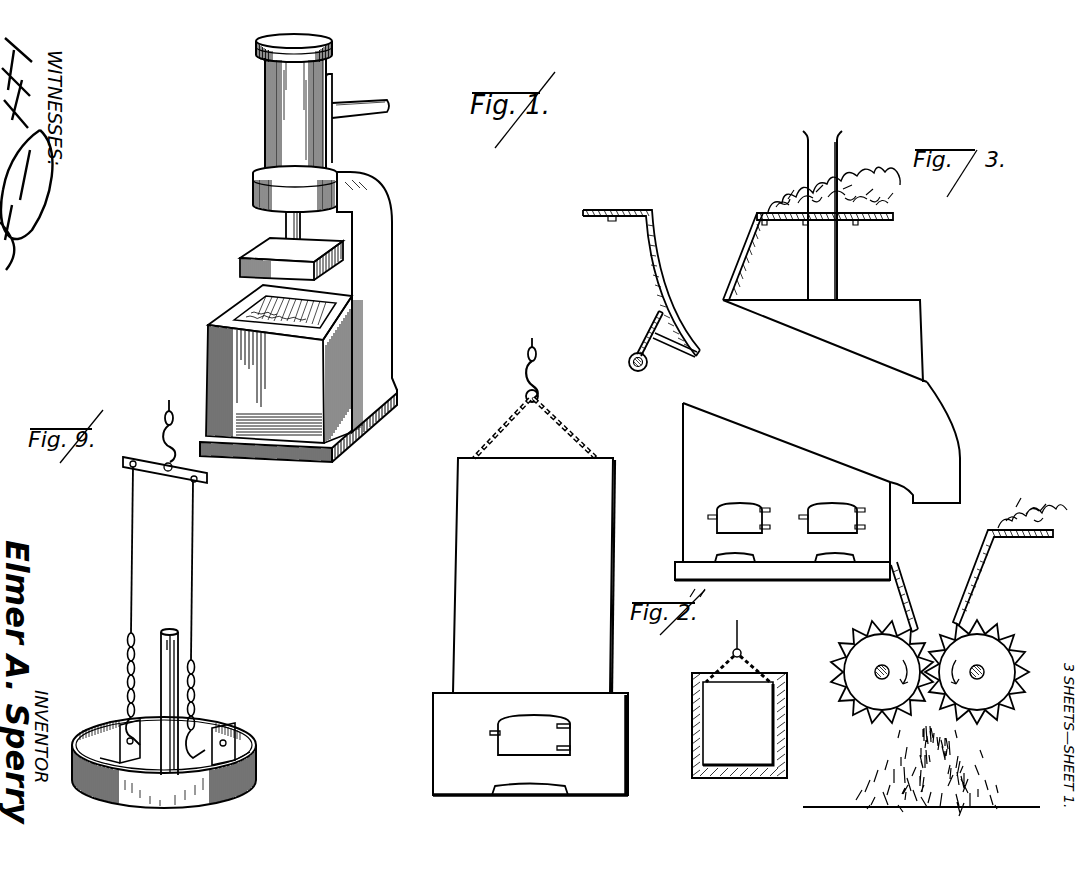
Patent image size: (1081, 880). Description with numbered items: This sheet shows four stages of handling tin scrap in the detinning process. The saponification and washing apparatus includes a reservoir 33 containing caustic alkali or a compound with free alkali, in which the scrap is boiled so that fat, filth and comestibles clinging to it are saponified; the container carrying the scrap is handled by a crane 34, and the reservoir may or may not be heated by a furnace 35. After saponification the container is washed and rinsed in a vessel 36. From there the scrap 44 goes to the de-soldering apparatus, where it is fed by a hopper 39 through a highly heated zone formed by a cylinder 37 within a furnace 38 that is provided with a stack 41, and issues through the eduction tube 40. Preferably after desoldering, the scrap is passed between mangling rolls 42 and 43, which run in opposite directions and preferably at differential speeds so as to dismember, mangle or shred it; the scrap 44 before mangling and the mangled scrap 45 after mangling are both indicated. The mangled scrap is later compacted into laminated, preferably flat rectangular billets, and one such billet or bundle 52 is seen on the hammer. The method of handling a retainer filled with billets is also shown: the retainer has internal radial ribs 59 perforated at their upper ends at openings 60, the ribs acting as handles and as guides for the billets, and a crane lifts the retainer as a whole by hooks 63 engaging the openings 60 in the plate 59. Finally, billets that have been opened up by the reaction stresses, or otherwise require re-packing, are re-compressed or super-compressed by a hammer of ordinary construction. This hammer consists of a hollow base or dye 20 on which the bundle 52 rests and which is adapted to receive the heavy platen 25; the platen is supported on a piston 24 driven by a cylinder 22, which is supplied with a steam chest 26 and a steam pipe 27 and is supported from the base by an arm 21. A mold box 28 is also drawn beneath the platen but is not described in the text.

In FIG. 1, the hollow base or dye 20 is at (300, 425).
In FIG. 1, the arm 21 is at (378, 272).
In FIG. 1, the cylinder 22 is at (262, 109).
In FIG. 1, the piston 24 is at (286, 228).
In FIG. 1, the heavy platen 25 is at (240, 266).
In FIG. 1, the steam chest 26 is at (337, 92).
In FIG. 1, the steam pipe 27 is at (388, 106).
In FIG. 1, the mold box 28 is at (240, 330).
In FIG. 1, the billet 52 is at (264, 305).
In FIG. 2, the reservoir 33 is at (534, 575).
In FIG. 2, the crane 34 is at (545, 380).
In FIG. 2, the furnace 35 is at (530, 744).
In FIG. 2, the washing vessel 36 is at (788, 727).
In FIG. 3, the cylinder 37 is at (805, 391).
In FIG. 3, the furnace 38 is at (799, 448).
In FIG. 3, the hopper 39 is at (663, 261).
In FIG. 3, the eduction tube 40 is at (925, 442).
In FIG. 3, the stack 41 is at (830, 160).
In FIG. 3, the mangling roll 42 is at (977, 672).
In FIG. 3, the mangling roll 43 is at (882, 672).
In FIG. 2, the scrap 44 is at (732, 730).
In FIG. 3, the scrap 44 is at (795, 194).
In FIG. 3, the mangled scrap 45 is at (880, 757).
In FIG. 9, the internal radial rib 59 is at (114, 732).
In FIG. 9, the opening 60 is at (223, 733).
In FIG. 9, the hook 63 is at (200, 690).